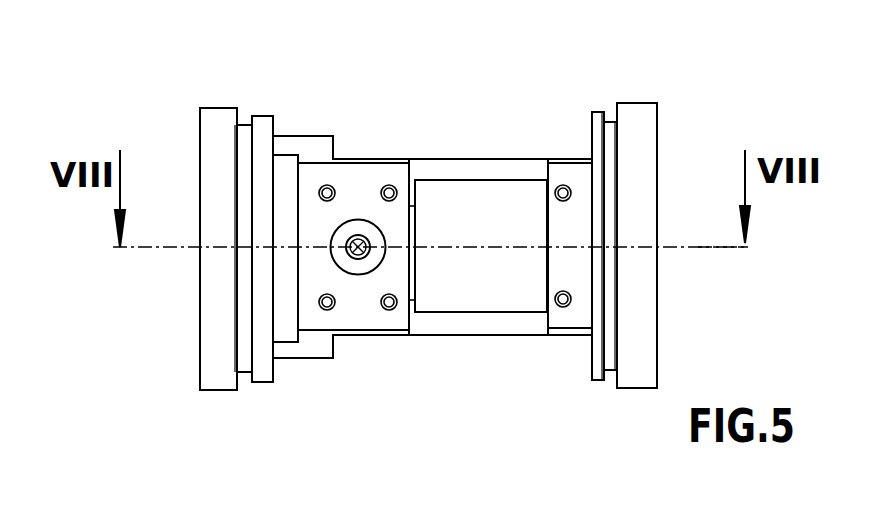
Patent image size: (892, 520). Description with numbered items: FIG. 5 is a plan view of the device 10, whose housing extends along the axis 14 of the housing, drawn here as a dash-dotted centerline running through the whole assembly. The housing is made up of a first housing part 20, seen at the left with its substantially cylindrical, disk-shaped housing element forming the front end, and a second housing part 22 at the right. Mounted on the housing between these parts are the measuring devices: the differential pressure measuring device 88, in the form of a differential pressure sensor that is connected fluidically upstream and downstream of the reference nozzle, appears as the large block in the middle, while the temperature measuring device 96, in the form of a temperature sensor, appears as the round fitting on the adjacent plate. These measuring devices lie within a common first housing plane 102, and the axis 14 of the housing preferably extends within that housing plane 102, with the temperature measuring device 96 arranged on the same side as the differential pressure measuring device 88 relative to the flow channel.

The device 10 is at (365, 68).
The axis of the housing 14 is at (662, 247).
The first housing part 20 is at (218, 403).
The second housing part 22 is at (580, 373).
The differential pressure measuring device 88 is at (479, 288).
The temperature measuring device 96 is at (356, 258).
The first housing plane 102 is at (698, 247).